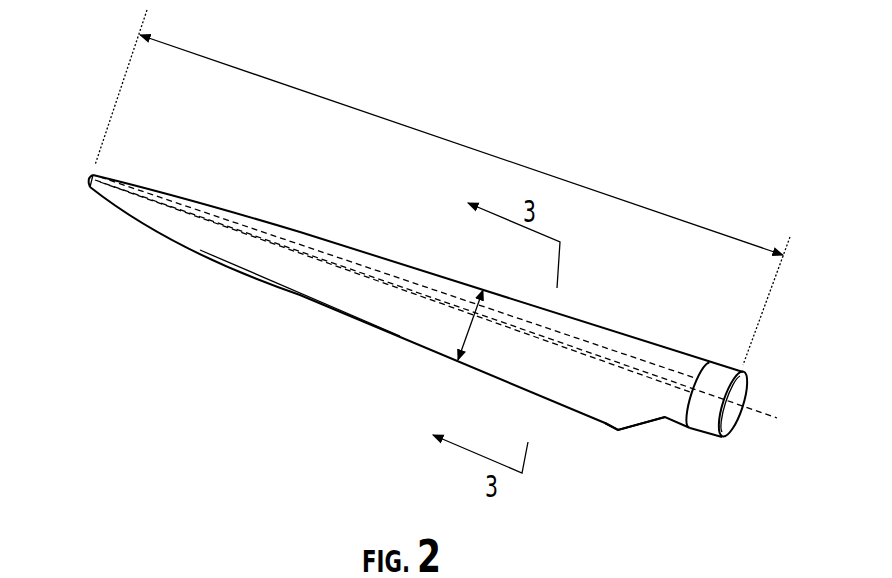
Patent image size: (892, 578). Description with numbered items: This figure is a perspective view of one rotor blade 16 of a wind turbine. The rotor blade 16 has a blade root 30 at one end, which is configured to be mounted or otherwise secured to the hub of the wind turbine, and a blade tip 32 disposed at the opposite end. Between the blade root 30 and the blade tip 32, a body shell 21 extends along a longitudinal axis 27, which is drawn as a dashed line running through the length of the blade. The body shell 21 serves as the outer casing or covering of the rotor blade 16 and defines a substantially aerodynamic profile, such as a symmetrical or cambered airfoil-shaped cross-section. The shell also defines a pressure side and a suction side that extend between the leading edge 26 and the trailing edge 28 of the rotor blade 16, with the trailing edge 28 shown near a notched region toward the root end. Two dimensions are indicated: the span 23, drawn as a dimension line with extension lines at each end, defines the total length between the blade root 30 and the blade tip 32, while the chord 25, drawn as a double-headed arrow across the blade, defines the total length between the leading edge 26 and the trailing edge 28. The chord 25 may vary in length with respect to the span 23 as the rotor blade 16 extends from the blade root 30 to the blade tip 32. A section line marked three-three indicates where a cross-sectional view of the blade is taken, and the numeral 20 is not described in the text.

The rotor blade 16 is at (668, 148).
The internal cavity 20 is at (367, 285).
The body shell 21 is at (295, 272).
The span 23 is at (378, 112).
The chord 25 is at (457, 323).
The leading edge 26 is at (605, 326).
The longitudinal axis 27 is at (92, 178).
The trailing edge 28 is at (583, 418).
The blade root 30 is at (708, 420).
The blade tip 32 is at (90, 174).